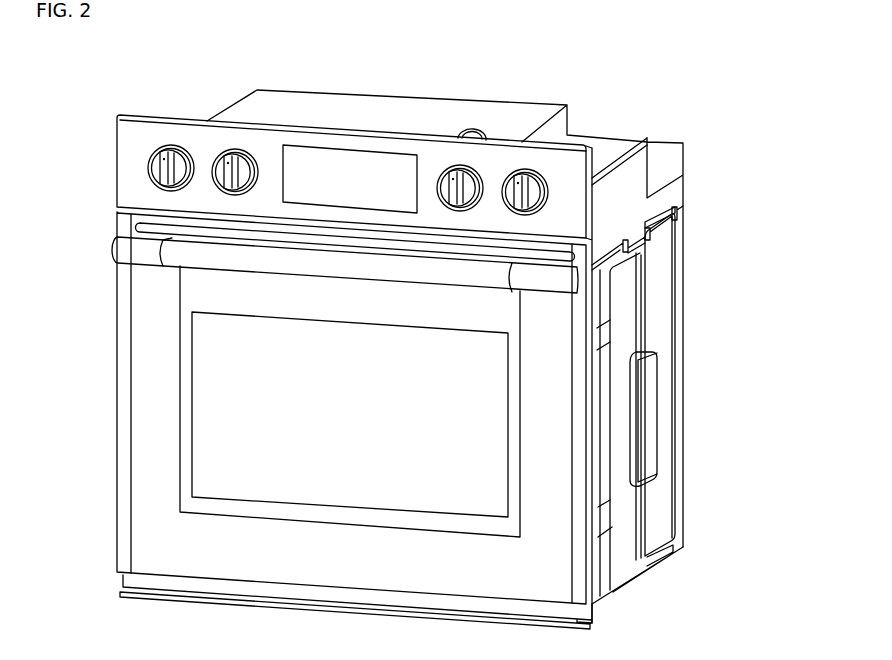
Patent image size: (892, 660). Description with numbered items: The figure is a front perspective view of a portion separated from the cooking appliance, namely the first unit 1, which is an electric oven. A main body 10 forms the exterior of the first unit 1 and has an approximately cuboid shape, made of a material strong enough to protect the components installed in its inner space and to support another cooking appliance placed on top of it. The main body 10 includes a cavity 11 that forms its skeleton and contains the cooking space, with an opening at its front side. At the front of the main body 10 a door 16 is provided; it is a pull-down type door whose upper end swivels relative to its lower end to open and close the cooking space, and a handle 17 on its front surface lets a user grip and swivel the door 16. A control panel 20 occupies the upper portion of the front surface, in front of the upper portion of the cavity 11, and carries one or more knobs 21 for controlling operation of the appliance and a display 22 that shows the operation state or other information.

The first unit 1 is at (90, 104).
The main body 10 is at (700, 369).
The cavity 11 is at (660, 290).
The door 16 is at (152, 375).
The handle 17 is at (212, 262).
The control panel 20 is at (432, 151).
The knob 21 is at (218, 172).
The display 22 is at (352, 173).